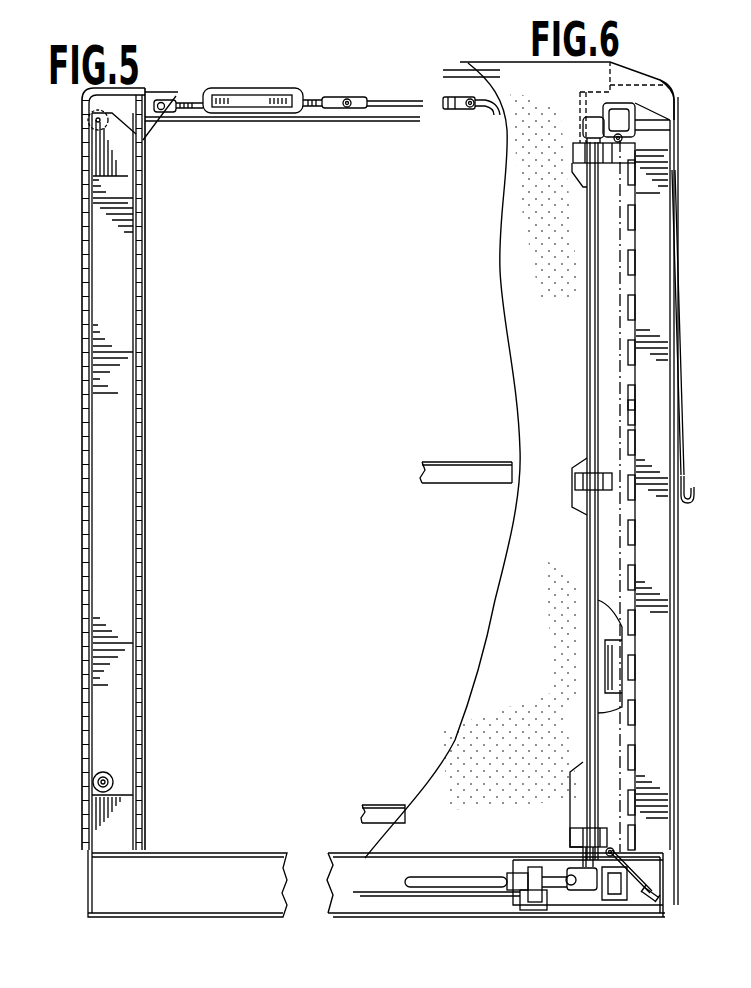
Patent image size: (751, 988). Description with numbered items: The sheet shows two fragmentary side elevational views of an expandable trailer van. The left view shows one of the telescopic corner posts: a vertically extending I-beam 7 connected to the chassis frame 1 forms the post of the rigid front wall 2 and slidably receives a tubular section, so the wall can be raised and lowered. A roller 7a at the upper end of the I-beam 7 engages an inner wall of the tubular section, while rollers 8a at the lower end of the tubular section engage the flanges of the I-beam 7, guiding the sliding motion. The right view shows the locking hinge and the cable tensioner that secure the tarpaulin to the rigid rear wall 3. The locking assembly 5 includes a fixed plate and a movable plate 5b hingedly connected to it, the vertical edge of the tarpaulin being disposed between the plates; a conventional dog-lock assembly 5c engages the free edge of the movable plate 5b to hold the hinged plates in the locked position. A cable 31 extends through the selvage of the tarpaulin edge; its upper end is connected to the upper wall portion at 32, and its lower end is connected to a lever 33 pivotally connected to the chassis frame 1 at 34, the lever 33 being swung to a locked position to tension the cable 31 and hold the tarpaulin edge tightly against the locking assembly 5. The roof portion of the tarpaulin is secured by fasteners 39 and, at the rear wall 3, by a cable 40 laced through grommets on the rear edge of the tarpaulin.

In FIG. 5, the chassis frame 1 is at (170, 872).
In FIG. 5, the front wall 2 is at (80, 562).
In FIG. 6, the rear wall 3 is at (663, 568).
In FIG. 6, the locking assembly 5 is at (586, 367).
In FIG. 6, the movable plate 5b is at (628, 414).
In FIG. 6, the dog-lock assembly 5c is at (590, 533).
In FIG. 5, the I-beam 7 is at (128, 576).
In FIG. 5, the roller 7a is at (90, 116).
In FIG. 5, the rollers 8a is at (95, 787).
In FIG. 6, the cable 31 is at (630, 233).
In FIG. 6, the cable connection 32 is at (588, 131).
In FIG. 6, the lever 33 is at (647, 897).
In FIG. 6, the pivot connection 34 is at (656, 886).
In FIG. 6, the fasteners 39 is at (680, 360).
In FIG. 6, the cable 40 is at (688, 480).